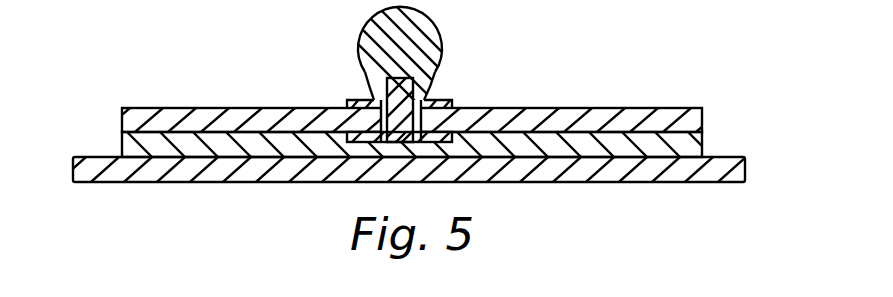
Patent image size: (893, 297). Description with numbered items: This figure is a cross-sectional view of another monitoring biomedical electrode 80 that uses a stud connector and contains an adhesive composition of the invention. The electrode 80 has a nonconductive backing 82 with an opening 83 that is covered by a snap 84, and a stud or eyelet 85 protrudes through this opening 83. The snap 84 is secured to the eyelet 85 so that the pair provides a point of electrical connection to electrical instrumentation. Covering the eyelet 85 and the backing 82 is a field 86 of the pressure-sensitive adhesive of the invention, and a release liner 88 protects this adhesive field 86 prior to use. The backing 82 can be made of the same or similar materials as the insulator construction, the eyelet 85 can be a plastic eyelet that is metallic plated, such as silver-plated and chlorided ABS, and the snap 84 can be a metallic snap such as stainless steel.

The electrode 80 is at (642, 58).
The nonconductive backing 82 is at (568, 108).
The opening 83 is at (378, 93).
The snap 84 is at (417, 62).
The eyelet 85 is at (432, 77).
The field of adhesive 86 is at (121, 146).
The release liner 88 is at (72, 163).